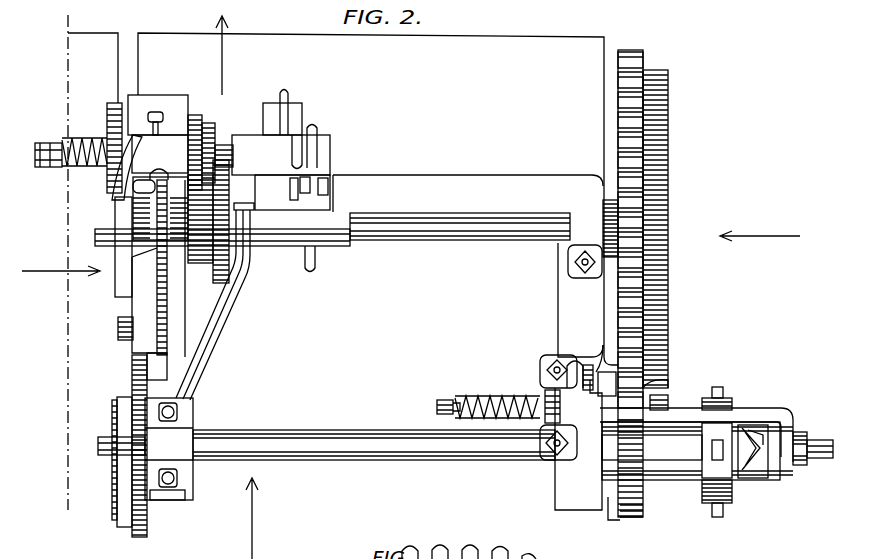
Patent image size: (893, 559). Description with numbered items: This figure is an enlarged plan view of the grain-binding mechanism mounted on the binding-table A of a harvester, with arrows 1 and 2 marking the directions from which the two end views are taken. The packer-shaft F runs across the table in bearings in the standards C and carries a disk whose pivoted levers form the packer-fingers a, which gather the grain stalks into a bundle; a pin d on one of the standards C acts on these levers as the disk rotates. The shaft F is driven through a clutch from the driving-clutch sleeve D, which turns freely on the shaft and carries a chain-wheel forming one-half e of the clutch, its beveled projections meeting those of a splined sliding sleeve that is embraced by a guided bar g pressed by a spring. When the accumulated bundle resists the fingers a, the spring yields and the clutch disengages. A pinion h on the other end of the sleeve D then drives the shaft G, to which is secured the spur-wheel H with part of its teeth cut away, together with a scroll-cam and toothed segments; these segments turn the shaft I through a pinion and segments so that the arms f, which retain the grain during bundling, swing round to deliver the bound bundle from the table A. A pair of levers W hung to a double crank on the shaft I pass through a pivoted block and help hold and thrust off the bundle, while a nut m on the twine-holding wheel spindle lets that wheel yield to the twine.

The binding-table A is at (343, 199).
The spur-wheel H is at (630, 275).
The standard C is at (475, 266).
The shaft G is at (332, 242).
The arm f is at (109, 125).
The nut m is at (155, 110).
The shaft I is at (38, 155).
The lever W is at (288, 94).
The pin d is at (118, 330).
The packer-finger a is at (130, 380).
The packer-shaft F is at (313, 437).
The pinion h is at (636, 518).
The guided bar g is at (696, 427).
The driving-clutch sleeve D is at (697, 451).
The space c is at (753, 451).
The clutch-half e is at (760, 435).
The arrow 1 is at (760, 231).
The arrow 2 is at (61, 265).